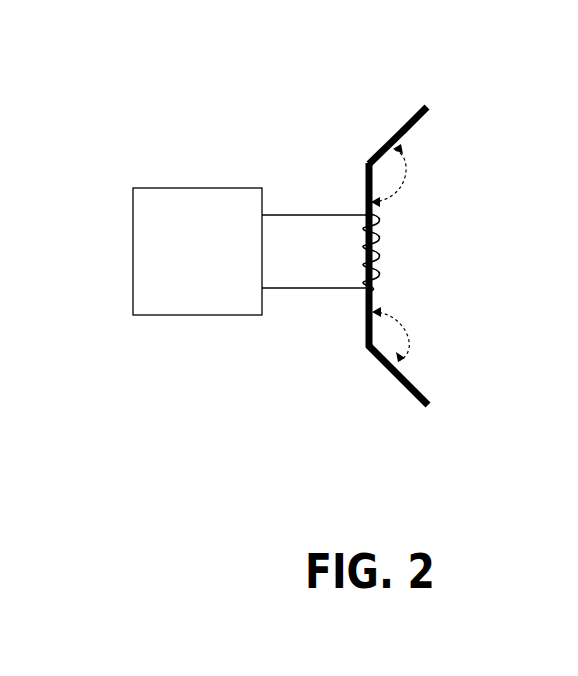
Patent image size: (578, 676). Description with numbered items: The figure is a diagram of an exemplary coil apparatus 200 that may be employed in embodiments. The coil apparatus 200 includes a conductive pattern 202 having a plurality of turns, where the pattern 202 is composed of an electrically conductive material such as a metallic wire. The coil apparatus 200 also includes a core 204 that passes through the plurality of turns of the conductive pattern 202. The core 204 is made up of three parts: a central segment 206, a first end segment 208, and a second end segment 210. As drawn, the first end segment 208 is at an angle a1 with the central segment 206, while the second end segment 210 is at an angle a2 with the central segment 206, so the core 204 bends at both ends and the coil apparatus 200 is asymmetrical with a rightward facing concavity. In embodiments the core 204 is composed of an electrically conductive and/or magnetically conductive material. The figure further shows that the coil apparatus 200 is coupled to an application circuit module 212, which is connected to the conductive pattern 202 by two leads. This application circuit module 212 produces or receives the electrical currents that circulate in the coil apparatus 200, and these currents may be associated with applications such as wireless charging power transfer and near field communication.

The coil apparatus 200 is at (264, 76).
The conductive pattern 202 is at (364, 270).
The core 204 is at (429, 107).
The central segment 206 is at (367, 296).
The first end segment 208 is at (402, 130).
The second end segment 210 is at (376, 364).
The application circuit module 212 is at (197, 251).
The angle a1 is at (404, 178).
The angle a2 is at (404, 329).